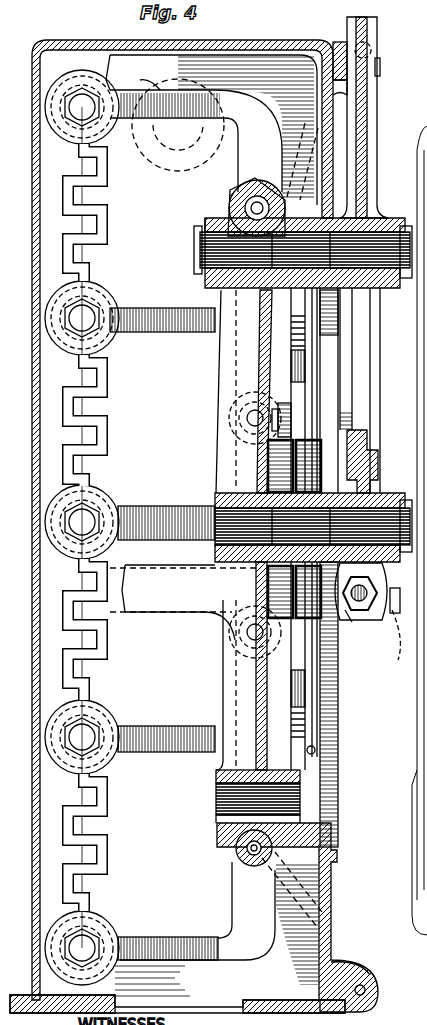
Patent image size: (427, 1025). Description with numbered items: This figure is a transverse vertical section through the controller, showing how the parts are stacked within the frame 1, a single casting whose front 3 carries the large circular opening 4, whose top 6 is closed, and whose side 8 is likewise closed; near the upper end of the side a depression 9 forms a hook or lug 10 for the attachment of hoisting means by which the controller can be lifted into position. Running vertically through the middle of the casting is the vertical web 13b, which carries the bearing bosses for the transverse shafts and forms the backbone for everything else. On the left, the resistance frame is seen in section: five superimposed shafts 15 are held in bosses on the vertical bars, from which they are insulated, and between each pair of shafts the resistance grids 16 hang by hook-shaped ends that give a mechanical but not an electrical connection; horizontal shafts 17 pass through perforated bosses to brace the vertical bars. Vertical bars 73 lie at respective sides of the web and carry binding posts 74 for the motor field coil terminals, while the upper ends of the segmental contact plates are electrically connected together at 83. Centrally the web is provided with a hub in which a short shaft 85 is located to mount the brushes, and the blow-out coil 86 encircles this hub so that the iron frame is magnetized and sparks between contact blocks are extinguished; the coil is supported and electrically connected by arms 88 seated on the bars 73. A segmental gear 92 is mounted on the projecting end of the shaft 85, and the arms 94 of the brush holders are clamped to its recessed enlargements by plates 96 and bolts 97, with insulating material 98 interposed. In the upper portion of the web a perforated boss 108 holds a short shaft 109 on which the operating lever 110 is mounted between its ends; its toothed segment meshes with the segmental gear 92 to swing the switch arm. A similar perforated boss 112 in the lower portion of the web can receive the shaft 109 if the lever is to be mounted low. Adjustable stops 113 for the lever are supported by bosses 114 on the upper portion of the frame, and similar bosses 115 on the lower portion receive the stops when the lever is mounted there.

The frame 1 is at (177, 957).
The front 3 is at (331, 870).
The large circular opening 4 is at (338, 806).
The casing 6 is at (258, 45).
The side 8 is at (211, 525).
The depressions 9 is at (178, 125).
The hooks or lugs 10 is at (190, 128).
The vertical web 13b is at (159, 78).
The superimposed shafts 15 is at (84, 90).
The grids 16 is at (106, 186).
The horizontal shafts 17 is at (240, 418).
The vertical bars 73 is at (258, 350).
The binding posts 74 is at (280, 160).
The electrical connection 83 is at (306, 365).
The short shaft 85 is at (214, 514).
The blow-out coil 86 is at (268, 462).
The arms 88 is at (291, 406).
The segmental gear 92 is at (378, 462).
The arms 94 is at (366, 618).
The plates 96 is at (399, 591).
The bolts 97 is at (389, 640).
The insulating material 98 is at (346, 625).
The perforated boss 108 is at (212, 298).
The short shaft 109 is at (372, 218).
The operating lever 110 is at (378, 96).
The perforated boss 112 is at (215, 800).
The adjustable stops 113 is at (380, 42).
The bosses 114 is at (338, 45).
The bosses 115 is at (352, 961).